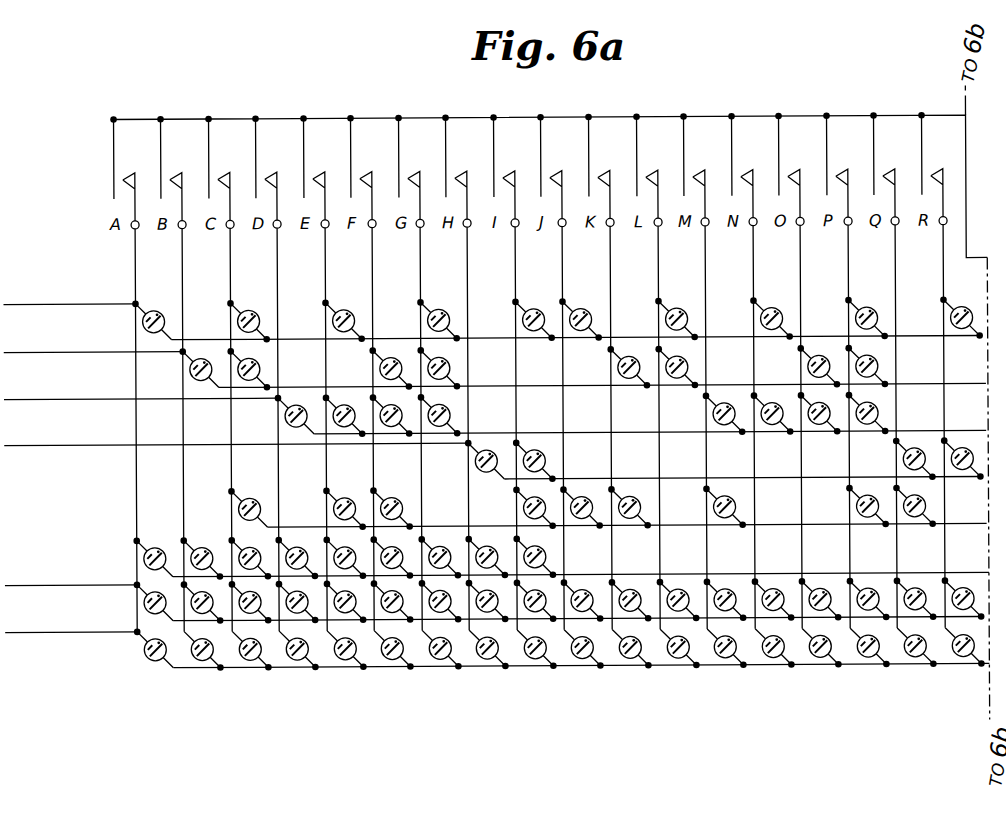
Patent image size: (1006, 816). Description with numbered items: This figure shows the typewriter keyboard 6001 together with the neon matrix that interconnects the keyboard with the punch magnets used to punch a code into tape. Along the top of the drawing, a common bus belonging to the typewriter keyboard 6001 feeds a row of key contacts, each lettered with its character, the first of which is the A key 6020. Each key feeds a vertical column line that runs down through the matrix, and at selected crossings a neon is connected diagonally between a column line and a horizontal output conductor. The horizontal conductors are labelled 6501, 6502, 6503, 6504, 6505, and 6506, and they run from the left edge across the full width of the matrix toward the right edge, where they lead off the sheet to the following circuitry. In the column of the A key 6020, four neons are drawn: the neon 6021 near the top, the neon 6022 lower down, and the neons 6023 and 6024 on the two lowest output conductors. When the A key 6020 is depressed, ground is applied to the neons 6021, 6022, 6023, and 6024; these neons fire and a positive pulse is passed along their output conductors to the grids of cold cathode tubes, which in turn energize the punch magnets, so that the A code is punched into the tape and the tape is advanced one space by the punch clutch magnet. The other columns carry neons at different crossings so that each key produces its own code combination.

The typewriter keyboard 6001 is at (94, 154).
The A key 6020 is at (127, 193).
The neon 6021 is at (175, 292).
The neon 6022 is at (148, 547).
The neon 6023 is at (147, 610).
The neon 6024 is at (146, 657).
The row input conductor 6501 is at (75, 300).
The row input conductor 6502 is at (70, 348).
The row input conductor 6503 is at (75, 395).
The row input conductor 6504 is at (77, 441).
The row input conductor 6505 is at (90, 581).
The row input conductor 6506 is at (85, 628).